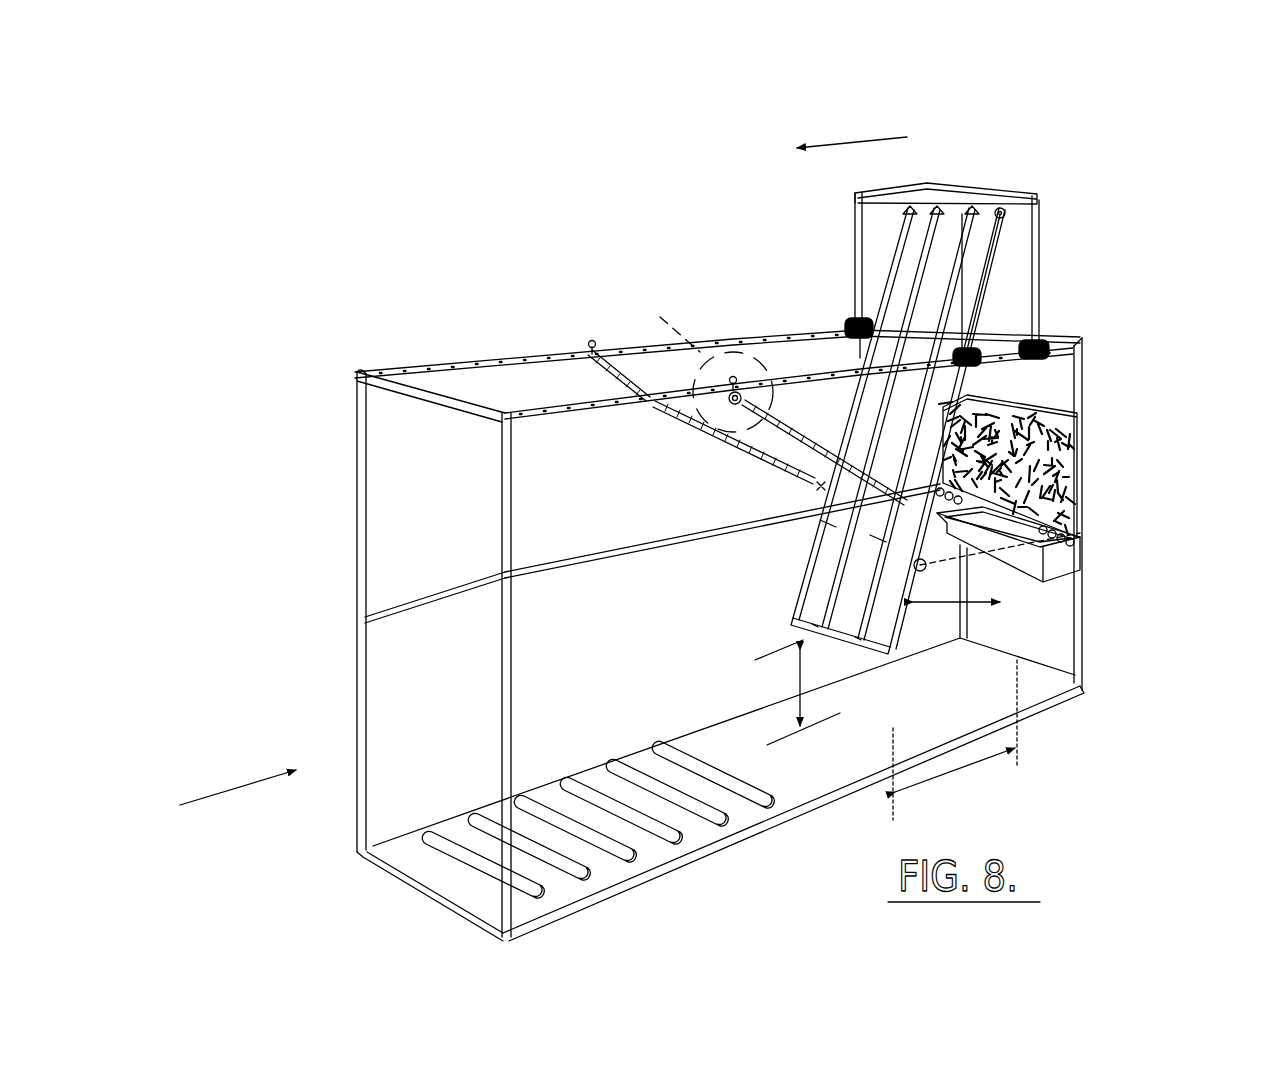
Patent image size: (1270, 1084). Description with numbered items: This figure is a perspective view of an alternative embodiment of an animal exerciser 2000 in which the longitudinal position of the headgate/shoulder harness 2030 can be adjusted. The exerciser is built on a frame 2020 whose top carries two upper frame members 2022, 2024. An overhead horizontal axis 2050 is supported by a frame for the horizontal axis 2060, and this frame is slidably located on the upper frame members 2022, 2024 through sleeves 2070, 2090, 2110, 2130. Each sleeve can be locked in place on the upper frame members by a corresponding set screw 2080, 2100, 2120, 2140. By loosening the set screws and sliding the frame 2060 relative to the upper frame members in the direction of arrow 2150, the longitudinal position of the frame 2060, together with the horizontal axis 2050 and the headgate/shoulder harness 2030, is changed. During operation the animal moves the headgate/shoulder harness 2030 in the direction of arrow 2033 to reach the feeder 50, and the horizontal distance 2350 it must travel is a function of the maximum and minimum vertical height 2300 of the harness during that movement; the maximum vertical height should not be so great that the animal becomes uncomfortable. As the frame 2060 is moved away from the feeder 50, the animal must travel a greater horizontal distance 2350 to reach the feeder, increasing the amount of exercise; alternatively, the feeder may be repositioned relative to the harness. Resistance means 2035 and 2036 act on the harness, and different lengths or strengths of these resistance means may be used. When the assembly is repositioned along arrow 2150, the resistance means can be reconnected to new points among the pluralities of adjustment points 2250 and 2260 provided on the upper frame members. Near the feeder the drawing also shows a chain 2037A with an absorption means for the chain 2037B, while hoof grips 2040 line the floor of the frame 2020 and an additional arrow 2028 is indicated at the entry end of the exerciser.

The exerciser 2000 is at (445, 291).
The frame 2020 is at (356, 535).
The upper frame member 2022 is at (355, 368).
The upper frame member 2024 is at (483, 408).
The plurality of adjustment points 2260 is at (509, 355).
The plurality of adjustment points 2250 is at (562, 416).
The resistance means 2035 is at (790, 428).
The resistance means 2036 is at (712, 438).
The overhead horizontal axis 2050 is at (1003, 208).
The frame for horizontal axis 2060 is at (1040, 194).
The headgate/shoulder harness 2030 is at (800, 540).
The sleeve 2130 is at (960, 307).
The set screw 2140 is at (810, 366).
The sleeve 2110 is at (845, 325).
The set screw 2120 is at (860, 349).
The set screw 2100 is at (975, 366).
The sleeve 2070 is at (1045, 340).
The sleeve 2090 is at (983, 345).
The set screw 2080 is at (1073, 362).
The feeder 50 is at (1089, 448).
The absorption means for chain 2037B is at (1080, 530).
The chain 2037A is at (1078, 597).
The arrow 2033 is at (956, 628).
The vertical height 2300 is at (798, 690).
The horizontal distance 2350 is at (960, 773).
The hoof grips 2040 is at (578, 888).
The arrow 2028 is at (190, 803).
The arrow 2150 is at (857, 140).